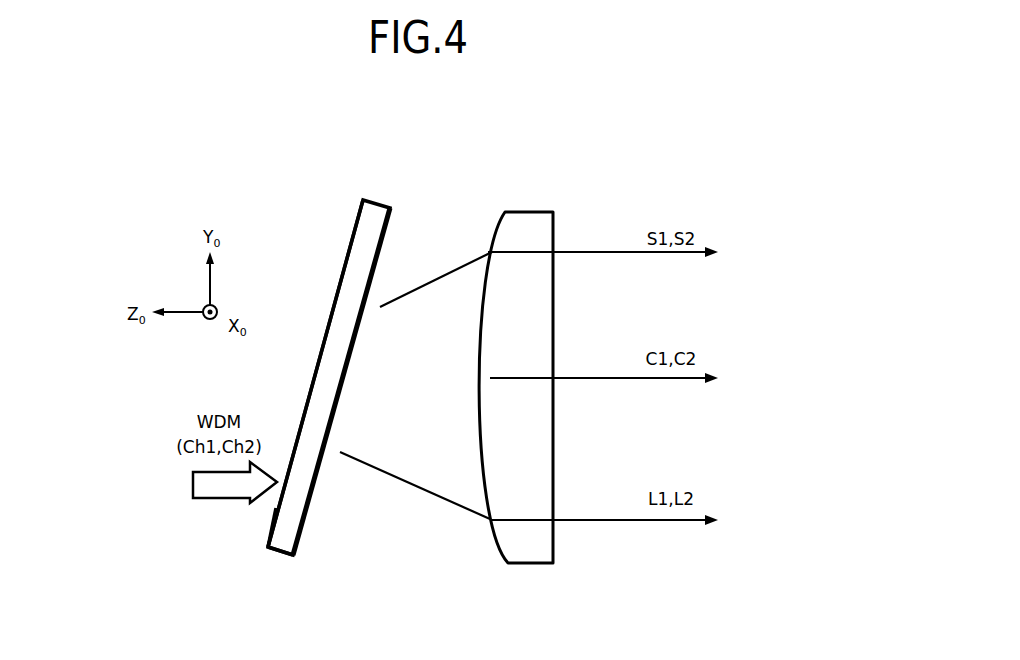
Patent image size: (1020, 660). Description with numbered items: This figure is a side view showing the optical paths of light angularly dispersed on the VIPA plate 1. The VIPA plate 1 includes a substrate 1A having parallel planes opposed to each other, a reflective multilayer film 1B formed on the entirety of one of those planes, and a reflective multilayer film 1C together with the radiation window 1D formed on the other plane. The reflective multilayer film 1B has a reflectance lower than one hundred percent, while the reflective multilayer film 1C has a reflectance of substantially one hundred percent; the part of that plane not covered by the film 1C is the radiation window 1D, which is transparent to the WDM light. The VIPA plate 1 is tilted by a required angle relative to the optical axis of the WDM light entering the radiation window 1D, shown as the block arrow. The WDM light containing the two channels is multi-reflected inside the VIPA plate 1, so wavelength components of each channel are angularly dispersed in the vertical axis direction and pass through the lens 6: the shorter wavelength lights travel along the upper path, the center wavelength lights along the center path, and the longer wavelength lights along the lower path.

The VIPA plate 1 is at (385, 183).
The substrate 1A is at (281, 553).
The reflective multilayer film 1B is at (347, 247).
The reflective multilayer film 1C is at (306, 518).
The radiation window 1D is at (275, 510).
The lens 6 is at (535, 211).